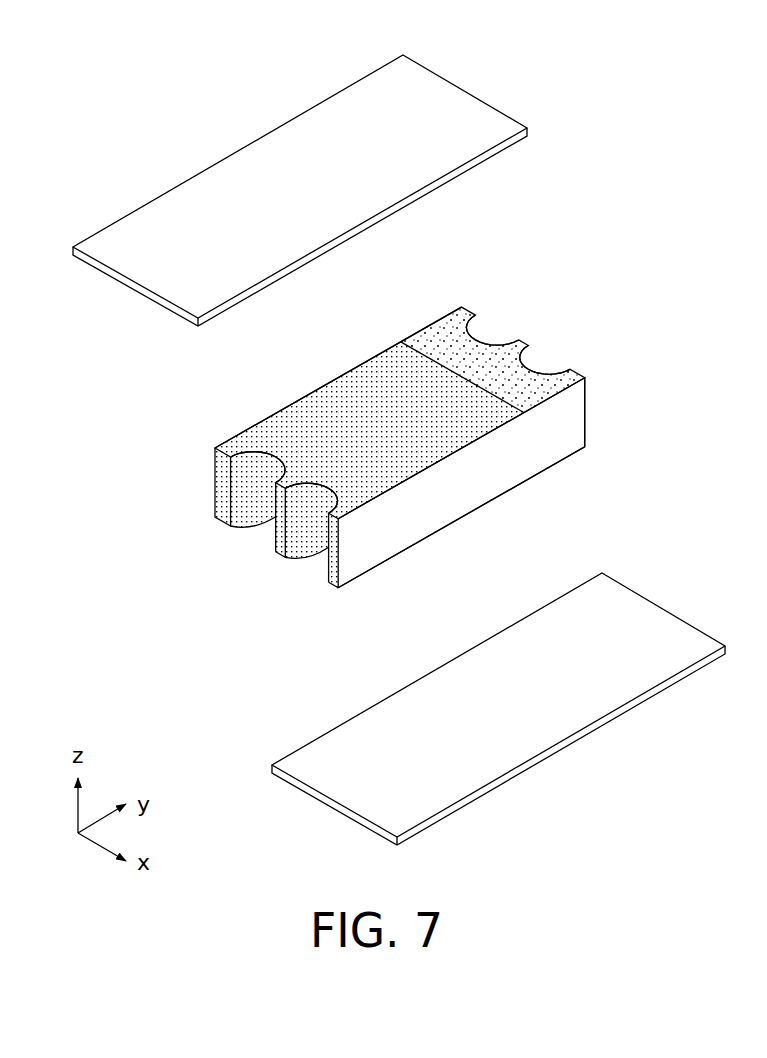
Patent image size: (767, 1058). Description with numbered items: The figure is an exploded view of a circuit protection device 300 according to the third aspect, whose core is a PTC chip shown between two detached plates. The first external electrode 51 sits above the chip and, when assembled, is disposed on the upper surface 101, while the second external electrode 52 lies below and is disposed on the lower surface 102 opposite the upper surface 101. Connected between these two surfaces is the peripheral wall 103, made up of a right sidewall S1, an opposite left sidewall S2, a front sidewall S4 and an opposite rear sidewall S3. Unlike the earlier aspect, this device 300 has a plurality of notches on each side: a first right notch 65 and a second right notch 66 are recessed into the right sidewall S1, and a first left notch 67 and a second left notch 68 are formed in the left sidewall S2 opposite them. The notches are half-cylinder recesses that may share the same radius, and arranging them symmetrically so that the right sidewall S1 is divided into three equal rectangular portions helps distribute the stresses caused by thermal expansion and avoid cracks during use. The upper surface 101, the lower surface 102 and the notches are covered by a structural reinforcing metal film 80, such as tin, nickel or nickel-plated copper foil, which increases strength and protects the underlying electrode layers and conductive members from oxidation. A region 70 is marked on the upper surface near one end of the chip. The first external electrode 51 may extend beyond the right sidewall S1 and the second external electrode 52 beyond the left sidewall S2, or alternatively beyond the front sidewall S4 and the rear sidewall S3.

The circuit protection device 300 is at (78, 56).
The first external electrode 51 is at (297, 130).
The second external electrode 52 is at (653, 617).
The peripheral wall 103 is at (339, 442).
The upper surface 101 is at (389, 360).
The lower surface 102 is at (400, 557).
The end region 70 is at (449, 325).
The first left notch 67 is at (497, 322).
The second left notch 68 is at (549, 357).
The first right notch 65 is at (250, 535).
The second right notch 66 is at (303, 563).
The structural reinforcing metal film 80 is at (282, 417).
The right sidewall S1 is at (213, 507).
The left sidewall S2 is at (585, 372).
The rear sidewall S3 is at (467, 492).
The front sidewall S4 is at (316, 384).